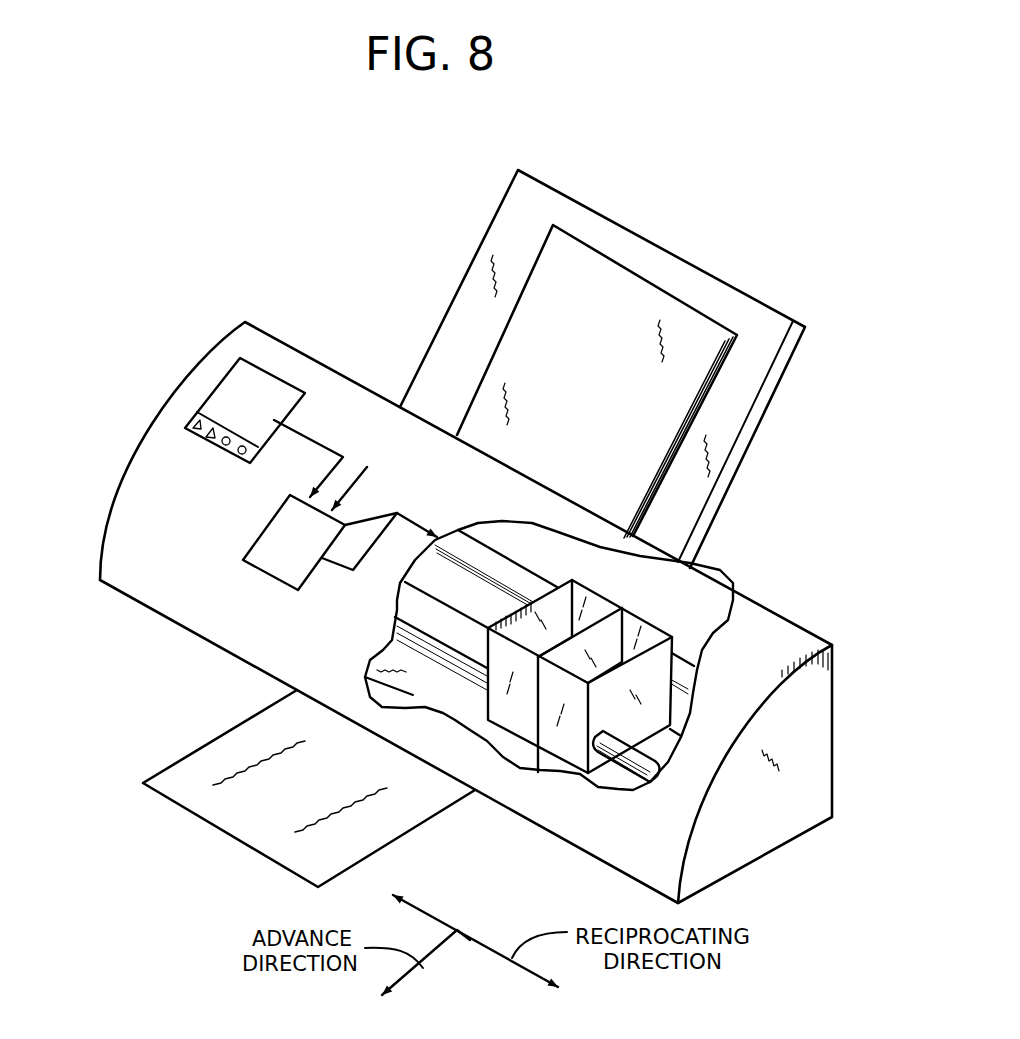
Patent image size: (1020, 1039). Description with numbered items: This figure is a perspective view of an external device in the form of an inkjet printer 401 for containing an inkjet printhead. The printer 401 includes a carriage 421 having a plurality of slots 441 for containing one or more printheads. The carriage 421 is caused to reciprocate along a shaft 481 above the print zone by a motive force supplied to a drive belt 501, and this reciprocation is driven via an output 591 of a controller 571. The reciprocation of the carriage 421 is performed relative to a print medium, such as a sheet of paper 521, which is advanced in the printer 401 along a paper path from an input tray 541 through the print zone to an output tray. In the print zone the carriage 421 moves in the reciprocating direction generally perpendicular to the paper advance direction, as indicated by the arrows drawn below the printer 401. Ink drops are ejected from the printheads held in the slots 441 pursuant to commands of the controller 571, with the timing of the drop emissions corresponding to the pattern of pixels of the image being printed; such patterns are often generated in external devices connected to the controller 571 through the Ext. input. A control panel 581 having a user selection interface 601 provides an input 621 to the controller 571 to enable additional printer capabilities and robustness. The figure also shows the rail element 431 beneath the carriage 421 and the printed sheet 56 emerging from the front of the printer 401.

The inkjet printer 401 is at (155, 338).
The control panel 581 is at (270, 377).
The user selection interface 601 is at (207, 443).
The input 621 is at (328, 472).
The controller 571 is at (265, 567).
The output 591 is at (335, 562).
The sheet of paper 521 is at (600, 388).
The input tray 541 is at (730, 407).
The slots 441 is at (588, 598).
The drive belt 501 is at (688, 672).
The guide rail 431 is at (418, 683).
The carriage 421 is at (533, 745).
The shaft 481 is at (620, 770).
The print paper 56 is at (217, 770).